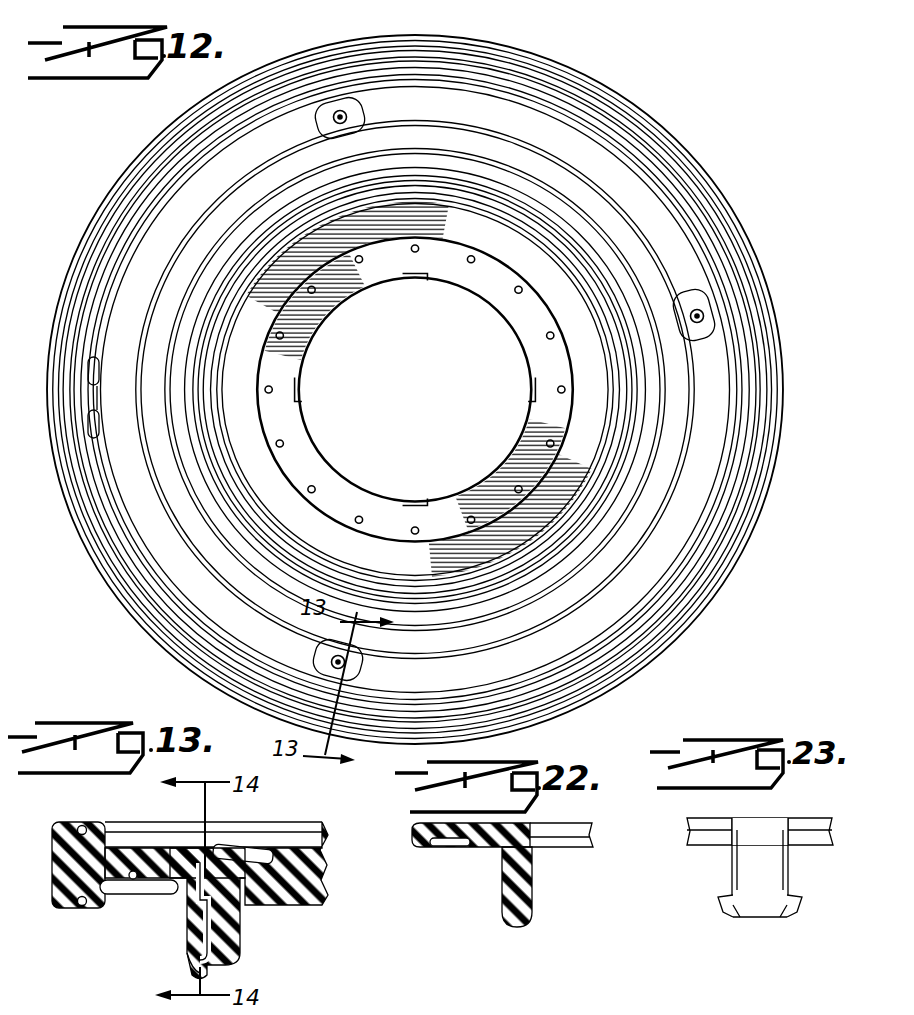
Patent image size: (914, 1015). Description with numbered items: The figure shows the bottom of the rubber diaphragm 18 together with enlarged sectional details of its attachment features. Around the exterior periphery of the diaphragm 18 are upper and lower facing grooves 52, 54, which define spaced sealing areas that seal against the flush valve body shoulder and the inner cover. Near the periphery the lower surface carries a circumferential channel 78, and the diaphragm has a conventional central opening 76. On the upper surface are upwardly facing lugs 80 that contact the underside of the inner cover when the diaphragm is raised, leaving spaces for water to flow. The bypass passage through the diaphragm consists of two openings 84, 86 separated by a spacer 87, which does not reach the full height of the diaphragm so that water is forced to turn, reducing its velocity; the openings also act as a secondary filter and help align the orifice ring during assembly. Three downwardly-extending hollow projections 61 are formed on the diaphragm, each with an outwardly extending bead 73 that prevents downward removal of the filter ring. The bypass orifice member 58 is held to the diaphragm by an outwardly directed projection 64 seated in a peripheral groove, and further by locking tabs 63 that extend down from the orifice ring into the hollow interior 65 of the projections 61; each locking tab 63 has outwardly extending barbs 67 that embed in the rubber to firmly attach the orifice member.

In FIG. 12, the diaphragm 18 is at (684, 122).
In FIG. 13, the diaphragm 18 is at (329, 903).
In FIG. 13, the upper facing groove 52 is at (85, 826).
In FIG. 12, the lower facing groove 54 is at (106, 574).
In FIG. 13, the lower facing groove 54 is at (80, 908).
In FIG. 22, the bypass orifice member 58 is at (590, 826).
In FIG. 23, the bypass orifice member 58 is at (814, 818).
In FIG. 12, the hollow projection 61 is at (318, 123).
In FIG. 13, the hollow projection 61 is at (240, 945).
In FIG. 22, the locking tab 63 is at (533, 902).
In FIG. 23, the locking tab 63 is at (745, 864).
In FIG. 22, the outwardly directed projection 64 is at (413, 830).
In FIG. 13, the hollow interior 65 is at (186, 957).
In FIG. 23, the barb 67 is at (725, 912).
In FIG. 12, the outwardly extending bead 73 is at (356, 101).
In FIG. 12, the central opening 76 is at (523, 340).
In FIG. 12, the circumferential channel 78 is at (103, 492).
In FIG. 13, the circumferential channel 78 is at (134, 880).
In FIG. 13, the lug 80 is at (246, 848).
In FIG. 12, the opening 84 is at (90, 372).
In FIG. 12, the opening 86 is at (91, 430).
In FIG. 12, the spacer 87 is at (98, 397).